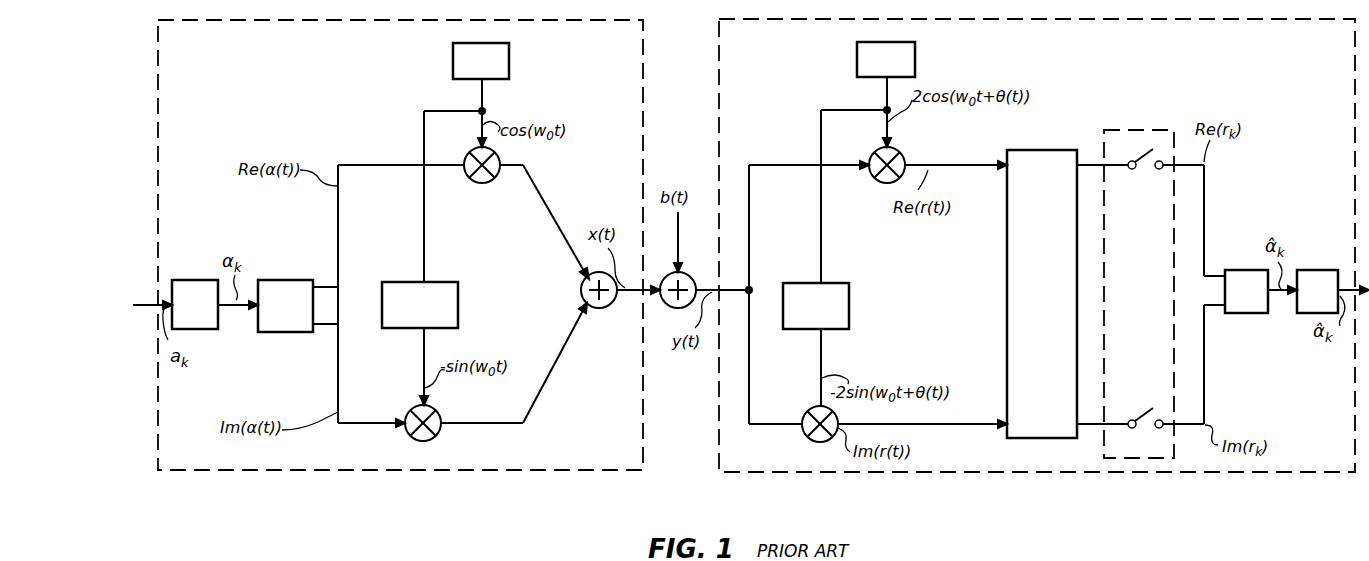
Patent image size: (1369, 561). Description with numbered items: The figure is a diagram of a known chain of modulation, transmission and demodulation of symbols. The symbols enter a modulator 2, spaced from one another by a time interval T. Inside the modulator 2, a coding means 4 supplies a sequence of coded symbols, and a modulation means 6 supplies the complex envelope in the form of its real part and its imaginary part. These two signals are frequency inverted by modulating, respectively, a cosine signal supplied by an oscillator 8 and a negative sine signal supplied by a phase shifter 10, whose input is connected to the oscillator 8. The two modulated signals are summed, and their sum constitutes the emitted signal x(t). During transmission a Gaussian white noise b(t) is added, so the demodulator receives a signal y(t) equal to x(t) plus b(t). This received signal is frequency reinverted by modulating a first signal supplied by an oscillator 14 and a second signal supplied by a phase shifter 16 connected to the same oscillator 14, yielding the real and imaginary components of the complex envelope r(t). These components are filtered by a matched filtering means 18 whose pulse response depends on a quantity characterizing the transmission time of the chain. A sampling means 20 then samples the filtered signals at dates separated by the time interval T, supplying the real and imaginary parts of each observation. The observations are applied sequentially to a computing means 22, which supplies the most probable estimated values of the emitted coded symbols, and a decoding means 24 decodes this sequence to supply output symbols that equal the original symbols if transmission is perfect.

The modulator 2 is at (400, 245).
The coding means 4 is at (203, 252).
The modulation means 6 is at (291, 280).
The oscillator 8 is at (514, 84).
The phase shifter 10 is at (458, 300).
The oscillator 14 is at (933, 49).
The phase shifter 16 is at (796, 283).
The matched filtering means 18 is at (968, 309).
The sampling means 20 is at (1135, 135).
The computing means 22 is at (1228, 365).
The decoding means 24 is at (1300, 218).